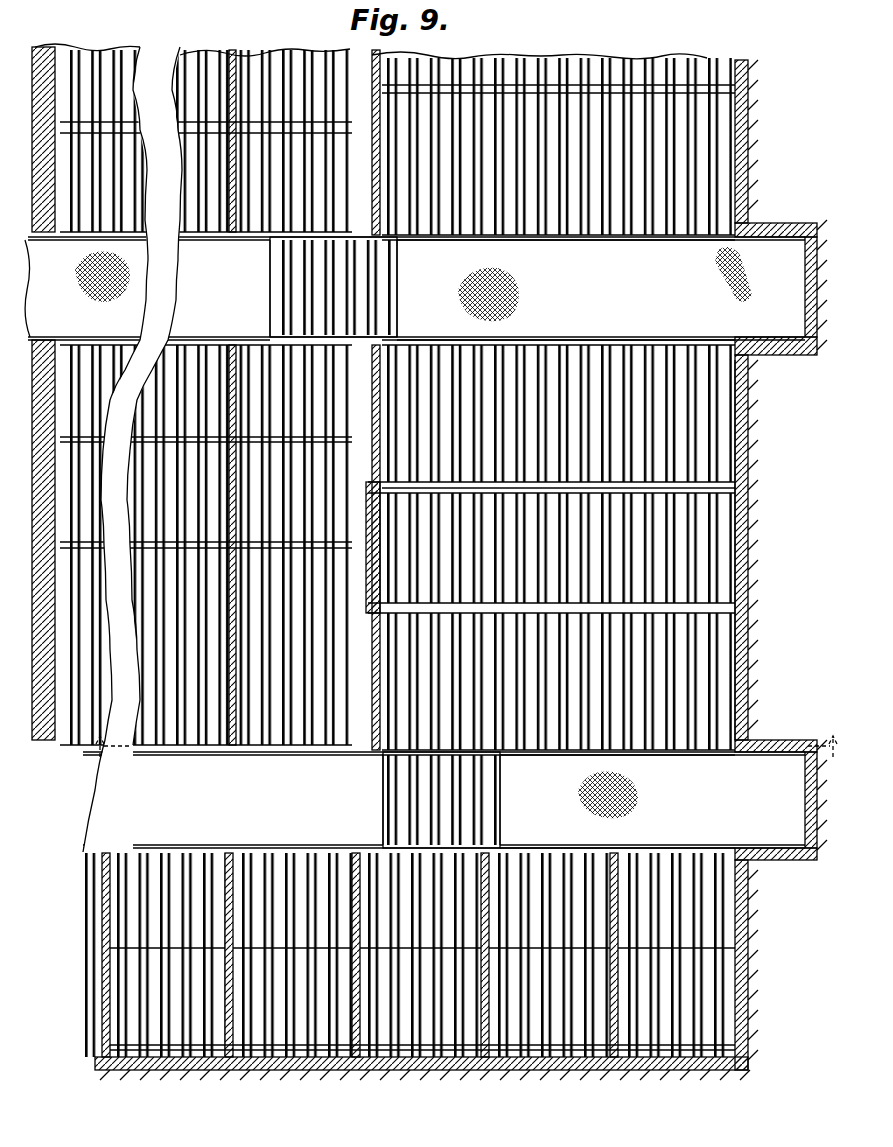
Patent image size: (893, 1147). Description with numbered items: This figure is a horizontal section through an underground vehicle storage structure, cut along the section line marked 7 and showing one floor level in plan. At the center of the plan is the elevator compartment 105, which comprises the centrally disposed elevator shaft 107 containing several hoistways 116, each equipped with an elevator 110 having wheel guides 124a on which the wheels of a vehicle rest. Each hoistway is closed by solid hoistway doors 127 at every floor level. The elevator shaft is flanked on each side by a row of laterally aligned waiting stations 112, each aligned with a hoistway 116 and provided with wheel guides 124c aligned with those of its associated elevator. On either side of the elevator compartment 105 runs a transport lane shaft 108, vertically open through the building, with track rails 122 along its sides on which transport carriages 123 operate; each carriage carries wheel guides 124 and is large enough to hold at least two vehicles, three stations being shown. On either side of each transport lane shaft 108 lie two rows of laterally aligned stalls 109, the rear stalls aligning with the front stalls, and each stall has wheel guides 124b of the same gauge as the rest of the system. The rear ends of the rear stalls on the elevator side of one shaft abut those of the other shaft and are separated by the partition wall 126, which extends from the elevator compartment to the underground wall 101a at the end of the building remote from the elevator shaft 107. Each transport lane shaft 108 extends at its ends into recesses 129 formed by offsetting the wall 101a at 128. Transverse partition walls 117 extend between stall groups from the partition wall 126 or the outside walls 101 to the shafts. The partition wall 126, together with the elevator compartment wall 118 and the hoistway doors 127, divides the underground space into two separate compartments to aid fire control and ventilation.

The underground wall 101 is at (240, 1072).
The underground wall 101a is at (762, 684).
The elevator compartment 105 is at (177, 60).
The elevator shaft 107 is at (530, 60).
The transport lane shaft 108 is at (573, 305).
The stall 109 is at (205, 162).
The elevator 110 is at (715, 543).
The waiting station 112 is at (382, 130).
The hoistway 116 is at (262, 85).
The transverse partition wall 117 is at (202, 752).
The elevator compartment wall 118 is at (418, 348).
The track rail 122 is at (265, 860).
The transport carriage 123 is at (258, 291).
The wheel guide 124 is at (365, 300).
The wheel guide 124a is at (700, 572).
The wheel guide 124b is at (262, 238).
The wheel guide 124c is at (452, 292).
The partition wall 126 is at (118, 549).
The hoistway door 127 is at (700, 88).
The wall offset 128 is at (775, 222).
The recess 129 is at (795, 296).
The section line 7 is at (466, 747).